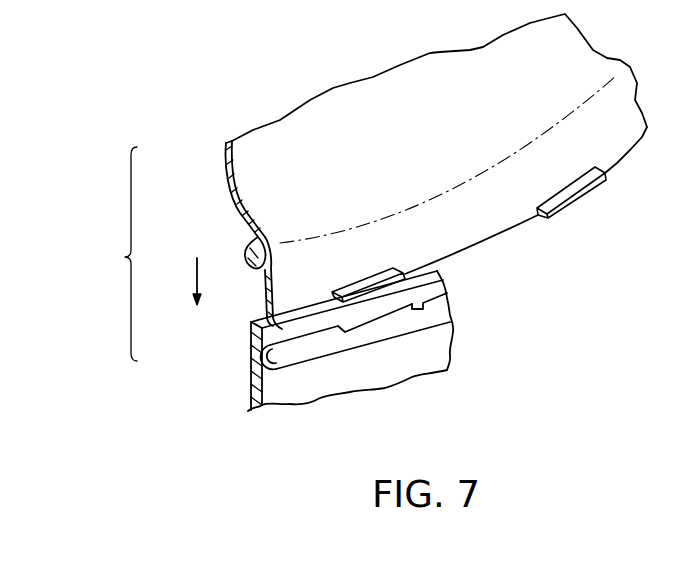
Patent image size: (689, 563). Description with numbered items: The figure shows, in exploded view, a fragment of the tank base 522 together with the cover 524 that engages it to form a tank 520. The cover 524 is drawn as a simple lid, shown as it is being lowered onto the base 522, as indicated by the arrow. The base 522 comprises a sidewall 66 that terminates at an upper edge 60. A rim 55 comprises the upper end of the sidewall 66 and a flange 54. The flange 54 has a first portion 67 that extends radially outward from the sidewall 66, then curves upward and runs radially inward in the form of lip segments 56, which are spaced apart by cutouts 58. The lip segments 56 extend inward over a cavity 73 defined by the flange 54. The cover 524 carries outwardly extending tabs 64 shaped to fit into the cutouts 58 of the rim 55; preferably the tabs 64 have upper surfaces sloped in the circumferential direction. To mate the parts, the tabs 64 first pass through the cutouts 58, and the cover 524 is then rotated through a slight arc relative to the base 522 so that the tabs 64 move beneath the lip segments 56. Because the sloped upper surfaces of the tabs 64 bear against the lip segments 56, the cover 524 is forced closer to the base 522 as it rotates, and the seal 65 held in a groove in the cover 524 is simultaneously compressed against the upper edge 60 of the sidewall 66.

The cover 524 is at (590, 48).
The tank 520 is at (125, 257).
The tank base 522 is at (546, 371).
The seal 65 is at (257, 262).
The upper edge 60 is at (250, 325).
The rim 55 is at (449, 314).
The flange 54 is at (378, 346).
The lip segments 56 is at (323, 338).
The cutouts 58 is at (391, 315).
The cavity 73 is at (258, 356).
The sidewall 66 is at (300, 393).
The first portion 67 is at (268, 375).
The tabs 64 is at (375, 282).